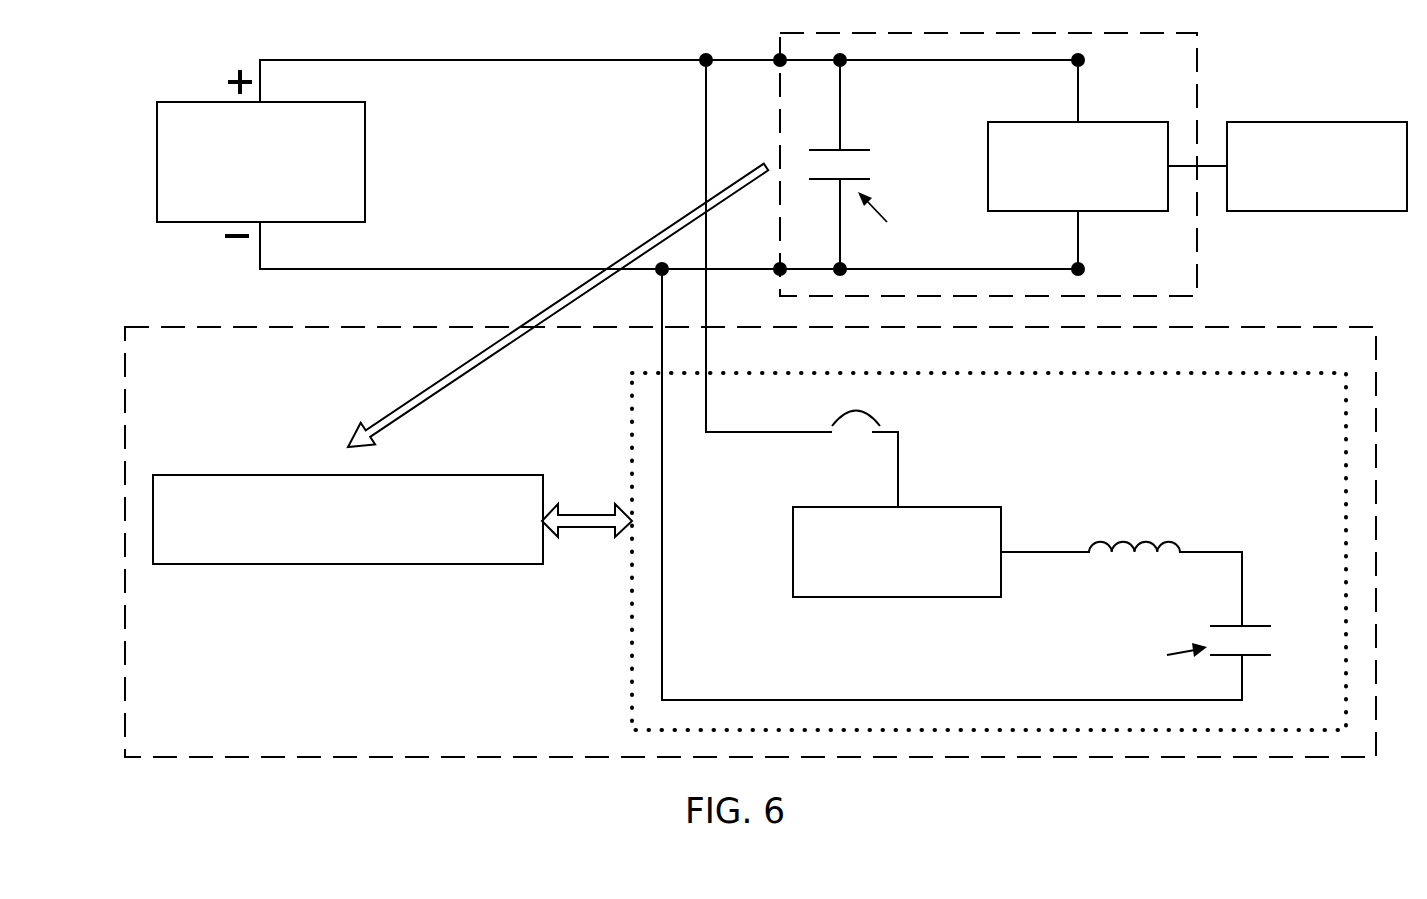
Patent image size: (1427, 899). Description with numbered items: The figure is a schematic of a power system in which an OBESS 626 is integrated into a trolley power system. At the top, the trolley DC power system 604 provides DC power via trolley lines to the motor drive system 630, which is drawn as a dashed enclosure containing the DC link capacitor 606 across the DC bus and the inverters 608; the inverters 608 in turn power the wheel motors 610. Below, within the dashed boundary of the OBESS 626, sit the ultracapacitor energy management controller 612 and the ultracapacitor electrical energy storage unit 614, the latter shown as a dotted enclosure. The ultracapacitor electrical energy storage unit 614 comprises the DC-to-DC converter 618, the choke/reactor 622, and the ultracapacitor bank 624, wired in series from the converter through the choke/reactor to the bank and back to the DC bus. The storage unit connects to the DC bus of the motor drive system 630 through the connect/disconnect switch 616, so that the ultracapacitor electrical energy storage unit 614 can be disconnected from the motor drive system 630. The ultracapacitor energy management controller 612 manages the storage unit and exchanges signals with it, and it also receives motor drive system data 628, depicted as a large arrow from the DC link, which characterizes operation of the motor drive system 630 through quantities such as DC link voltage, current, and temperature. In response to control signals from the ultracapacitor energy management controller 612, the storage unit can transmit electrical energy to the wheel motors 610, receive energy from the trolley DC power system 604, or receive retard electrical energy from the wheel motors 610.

The trolley DC power system 604 is at (365, 158).
The DC link capacitor 606 is at (863, 152).
The inverters 608 is at (1093, 122).
The wheel motors 610 is at (1317, 122).
The ultracapacitor energy management controller 612 is at (350, 564).
The ultracapacitor electrical energy storage unit 614 is at (632, 687).
The connect/disconnect switch 616 is at (875, 423).
The DC-to-DC converter 618 is at (928, 507).
The choke/reactor 622 is at (1137, 540).
The ultracapacitor bank 624 is at (1258, 623).
The OBESS 626 is at (398, 760).
The motor drive system data 628 is at (482, 363).
The motor drive system 630 is at (995, 33).